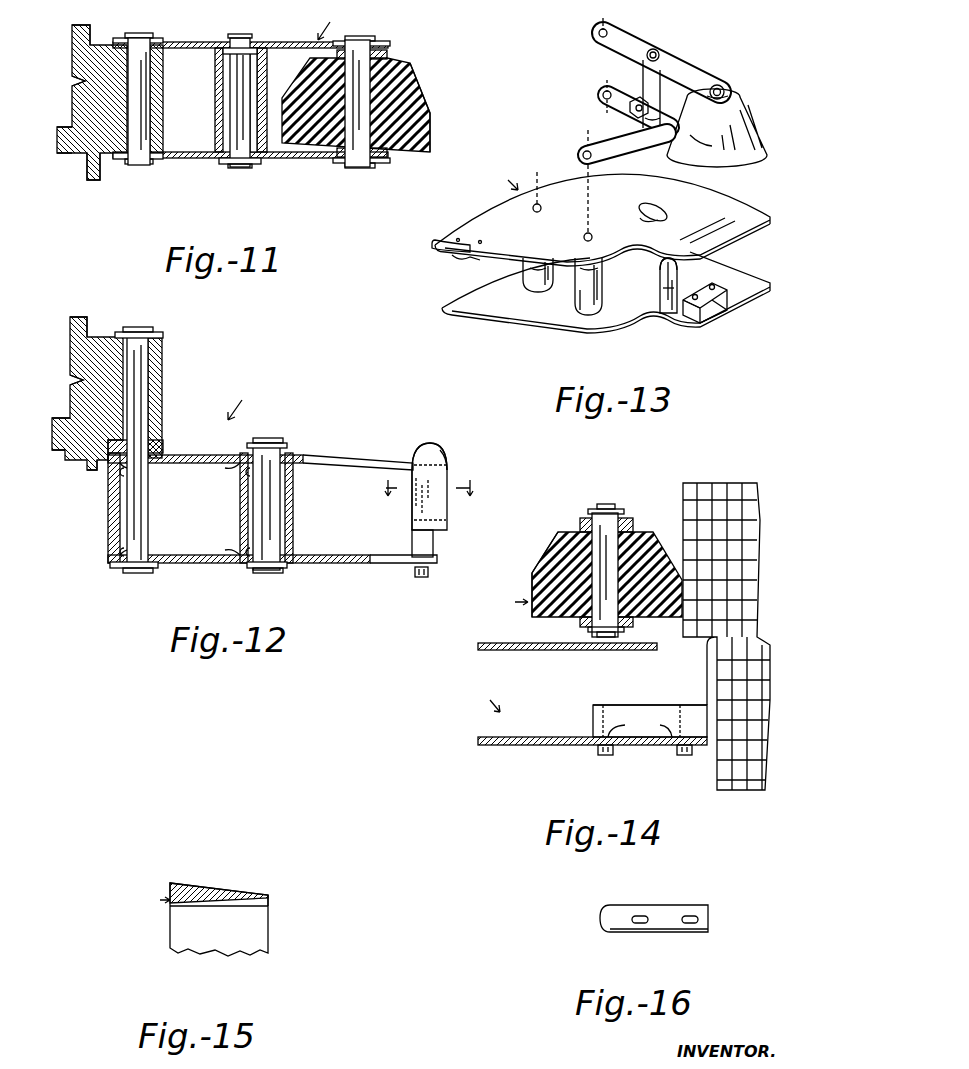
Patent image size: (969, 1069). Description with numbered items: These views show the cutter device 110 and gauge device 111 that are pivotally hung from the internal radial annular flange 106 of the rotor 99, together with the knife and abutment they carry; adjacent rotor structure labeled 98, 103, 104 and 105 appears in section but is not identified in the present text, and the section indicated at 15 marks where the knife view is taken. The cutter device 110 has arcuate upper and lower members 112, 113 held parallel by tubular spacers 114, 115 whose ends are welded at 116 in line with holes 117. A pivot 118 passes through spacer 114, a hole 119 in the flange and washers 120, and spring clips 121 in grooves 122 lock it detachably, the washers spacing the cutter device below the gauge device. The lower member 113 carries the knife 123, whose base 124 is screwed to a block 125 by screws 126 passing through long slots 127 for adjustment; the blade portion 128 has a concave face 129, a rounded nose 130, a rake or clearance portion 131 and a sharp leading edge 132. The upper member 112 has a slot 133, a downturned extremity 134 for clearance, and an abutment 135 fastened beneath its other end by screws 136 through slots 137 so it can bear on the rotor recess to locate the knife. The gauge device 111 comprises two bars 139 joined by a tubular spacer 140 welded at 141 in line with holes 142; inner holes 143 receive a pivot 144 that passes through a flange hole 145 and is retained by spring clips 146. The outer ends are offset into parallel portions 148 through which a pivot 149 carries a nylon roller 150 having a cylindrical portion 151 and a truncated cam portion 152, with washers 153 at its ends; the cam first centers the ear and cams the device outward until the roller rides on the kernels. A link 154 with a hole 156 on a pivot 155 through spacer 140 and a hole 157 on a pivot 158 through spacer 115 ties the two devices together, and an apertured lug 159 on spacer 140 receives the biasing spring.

In FIG. 11, the key 98 is at (58, 139).
In FIG. 12, the key 98 is at (56, 432).
In FIG. 11, the rotor 99 is at (90, 104).
In FIG. 12, the rotor 99 is at (80, 400).
In FIG. 11, the notch 103 is at (80, 81).
In FIG. 12, the notch 103 is at (76, 378).
In FIG. 11, the flange 104 is at (76, 40).
In FIG. 12, the flange 104 is at (74, 332).
In FIG. 11, the lug 105 is at (90, 170).
In FIG. 12, the lug 105 is at (90, 462).
In FIG. 11, the internal radial annular flange 106 is at (164, 122).
In FIG. 12, the internal radial annular flange 106 is at (162, 385).
In FIG. 12, the cutter device 110 is at (247, 405).
In FIG. 13, the cutter device 110 is at (500, 180).
In FIG. 14, the cutter device 110 is at (482, 701).
In FIG. 11, the gauge device 111 is at (329, 26).
In FIG. 14, the gauge device 111 is at (510, 602).
In FIG. 12, the upper member 112 is at (318, 458).
In FIG. 13, the upper member 112 is at (500, 216).
In FIG. 14, the upper member 112 is at (528, 650).
In FIG. 12, the lower member 113 is at (318, 558).
In FIG. 13, the lower member 113 is at (462, 300).
In FIG. 14, the lower member 113 is at (538, 745).
In FIG. 12, the tubular spacer 114 is at (108, 513).
In FIG. 13, the tubular spacer 114 is at (525, 276).
In FIG. 12, the tubular spacer 115 is at (240, 502).
In FIG. 13, the tubular spacer 115 is at (578, 305).
In FIG. 12, the weld 116 is at (225, 468).
In FIG. 13, the weld 116 is at (540, 290).
In FIG. 12, the holes 117 is at (122, 472).
In FIG. 13, the holes 117 is at (584, 236).
In FIG. 12, the pivot 118 is at (142, 368).
In FIG. 12, the hole 119 is at (141, 404).
In FIG. 12, the washers 120 is at (160, 446).
In FIG. 12, the spring clips 121 is at (160, 336).
In FIG. 12, the grooves 122 is at (138, 328).
In FIG. 12, the knife 123 is at (422, 442).
In FIG. 13, the knife 123 is at (698, 290).
In FIG. 14, the knife 123 is at (617, 698).
In FIG. 15, the knife 123 is at (150, 900).
In FIG. 12, the base 124 is at (412, 514).
In FIG. 13, the base 124 is at (718, 284).
In FIG. 14, the base 124 is at (633, 705).
In FIG. 12, the block 125 is at (412, 540).
In FIG. 13, the block 125 is at (720, 310).
In FIG. 14, the block 125 is at (593, 717).
In FIG. 12, the screws 126 is at (415, 574).
In FIG. 14, the screws 126 is at (598, 752).
In FIG. 14, the longitudinal slots 127 is at (660, 727).
In FIG. 12, the blade portion 128 is at (447, 513).
In FIG. 13, the blade portion 128 is at (662, 275).
In FIG. 14, the blade portion 128 is at (707, 680).
In FIG. 15, the blade portion 128 is at (190, 882).
In FIG. 12, the concave face 129 is at (445, 470).
In FIG. 13, the concave face 129 is at (663, 288).
In FIG. 15, the concave face 129 is at (215, 886).
In FIG. 12, the rounded nose 130 is at (428, 445).
In FIG. 13, the rounded nose 130 is at (668, 262).
In FIG. 15, the rake or clearance portion 131 is at (255, 902).
In FIG. 12, the leading edge 132 is at (445, 455).
In FIG. 15, the leading edge 132 is at (270, 894).
In FIG. 13, the slot 133 is at (660, 208).
In FIG. 13, the downturned extremity 134 is at (765, 218).
In FIG. 13, the abutment 135 is at (446, 252).
In FIG. 16, the abutment 135 is at (672, 910).
In FIG. 13, the screws 136 is at (474, 258).
In FIG. 16, the slots 137 is at (678, 940).
In FIG. 11, the elongate members 139 is at (180, 42).
In FIG. 13, the elongate members 139 is at (636, 45).
In FIG. 14, the elongate members 139 is at (592, 510).
In FIG. 11, the tubular spacer 140 is at (262, 80).
In FIG. 13, the tubular spacer 140 is at (643, 75).
In FIG. 11, the weld 141 is at (268, 52).
In FIG. 13, the weld 141 is at (678, 130).
In FIG. 11, the holes 142 is at (232, 36).
In FIG. 11, the holes 143 is at (140, 36).
In FIG. 13, the holes 143 is at (608, 30).
In FIG. 11, the pivot 144 is at (141, 100).
In FIG. 11, the hole 145 is at (150, 74).
In FIG. 11, the spring clips 146 is at (219, 45).
In FIG. 11, the parallel portions 148 is at (390, 46).
In FIG. 13, the parallel portions 148 is at (730, 92).
In FIG. 11, the pivot 149 is at (358, 45).
In FIG. 13, the pivot 149 is at (724, 86).
In FIG. 14, the pivot 149 is at (608, 525).
In FIG. 11, the roller 150 is at (430, 113).
In FIG. 13, the roller 150 is at (760, 132).
In FIG. 14, the roller 150 is at (648, 532).
In FIG. 11, the cylindrical portion 151 is at (430, 138).
In FIG. 14, the cylindrical portion 151 is at (532, 580).
In FIG. 11, the truncated cam portion 152 is at (424, 95).
In FIG. 14, the truncated cam portion 152 is at (550, 544).
In FIG. 11, the washers 153 is at (390, 55).
In FIG. 14, the washers 153 is at (580, 520).
In FIG. 11, the link 154 is at (258, 164).
In FIG. 13, the link 154 is at (618, 145).
In FIG. 11, the pivot 155 is at (232, 62).
In FIG. 13, the pivot 155 is at (660, 50).
In FIG. 11, the hole 156 is at (240, 170).
In FIG. 13, the hole 157 is at (582, 150).
In FIG. 12, the pivot 158 is at (262, 518).
In FIG. 13, the apertured lug 159 is at (634, 97).
In FIG. 12, the section line 15 is at (429, 488).